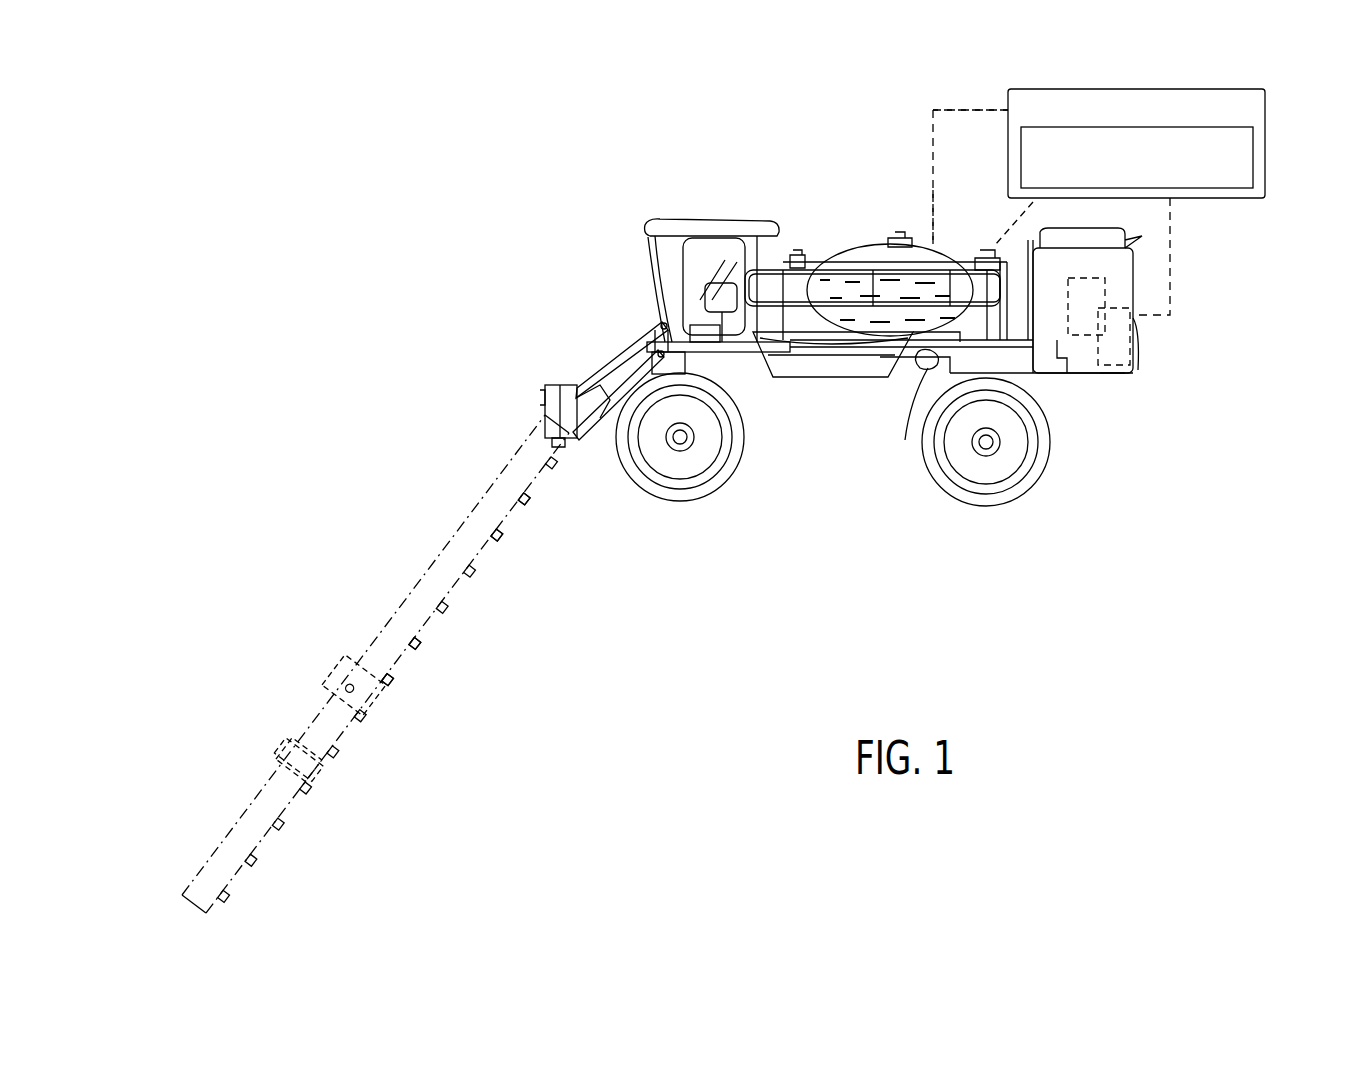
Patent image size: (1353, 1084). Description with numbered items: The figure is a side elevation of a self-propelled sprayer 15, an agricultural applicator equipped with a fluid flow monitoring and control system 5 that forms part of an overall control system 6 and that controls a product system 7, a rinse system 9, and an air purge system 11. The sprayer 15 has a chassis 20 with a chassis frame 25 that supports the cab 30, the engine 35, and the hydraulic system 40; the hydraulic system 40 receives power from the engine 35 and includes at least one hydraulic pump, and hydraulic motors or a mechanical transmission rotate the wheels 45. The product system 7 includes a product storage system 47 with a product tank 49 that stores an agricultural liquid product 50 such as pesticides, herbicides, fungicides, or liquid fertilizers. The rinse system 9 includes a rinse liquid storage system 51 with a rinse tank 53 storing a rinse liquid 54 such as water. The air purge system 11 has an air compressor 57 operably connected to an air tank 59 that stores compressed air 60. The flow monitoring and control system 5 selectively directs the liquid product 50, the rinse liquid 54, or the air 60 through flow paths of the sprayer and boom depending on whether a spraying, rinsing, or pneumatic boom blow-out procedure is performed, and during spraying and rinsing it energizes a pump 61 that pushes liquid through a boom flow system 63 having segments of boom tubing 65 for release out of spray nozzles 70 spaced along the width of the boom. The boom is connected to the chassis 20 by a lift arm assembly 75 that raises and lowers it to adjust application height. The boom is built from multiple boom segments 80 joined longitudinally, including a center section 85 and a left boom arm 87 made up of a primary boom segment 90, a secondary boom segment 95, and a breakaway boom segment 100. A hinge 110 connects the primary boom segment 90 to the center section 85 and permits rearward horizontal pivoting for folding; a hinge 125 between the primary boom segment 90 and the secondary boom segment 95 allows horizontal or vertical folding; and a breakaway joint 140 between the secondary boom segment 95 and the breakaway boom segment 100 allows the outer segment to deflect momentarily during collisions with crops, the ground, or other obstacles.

The flow monitoring and control system 5 is at (1217, 198).
The control system 6 is at (1268, 136).
The product system 7 is at (850, 140).
The rinse system 9 is at (982, 188).
The purge system 11 is at (908, 338).
The self-propelled sprayer 15 is at (903, 128).
The chassis 20 is at (852, 382).
The chassis frame 25 is at (920, 378).
The cab 30 is at (718, 213).
The engine 35 is at (1092, 300).
The hydraulic system 40 is at (1052, 305).
The wheels 45 is at (715, 490).
The product storage system 47 is at (945, 228).
The product tank 49 is at (863, 232).
The agricultural liquid product 50 is at (830, 280).
The rinse liquid storage system 51 is at (993, 240).
The rinse tank 53 is at (988, 246).
The rinse liquid 54 is at (897, 238).
The air compressor 57 is at (1102, 378).
The air tank 59 is at (1148, 356).
The air 60 is at (1145, 340).
The pump 61 is at (905, 455).
The boom flow system 63 is at (542, 500).
The boom tubing 65 is at (492, 548).
The spray nozzles 70 is at (445, 612).
The lift arm assembly 75 is at (645, 327).
The boom segments 80 is at (388, 505).
The center section 85 is at (555, 368).
The left boom arm 87 is at (485, 683).
The primary boom segment 90 is at (436, 505).
The secondary boom segment 95 is at (305, 680).
The breakaway boom segment 100 is at (240, 798).
The hinge 110 is at (545, 420).
The hinge 125 is at (378, 708).
The breakaway joint 140 is at (322, 780).